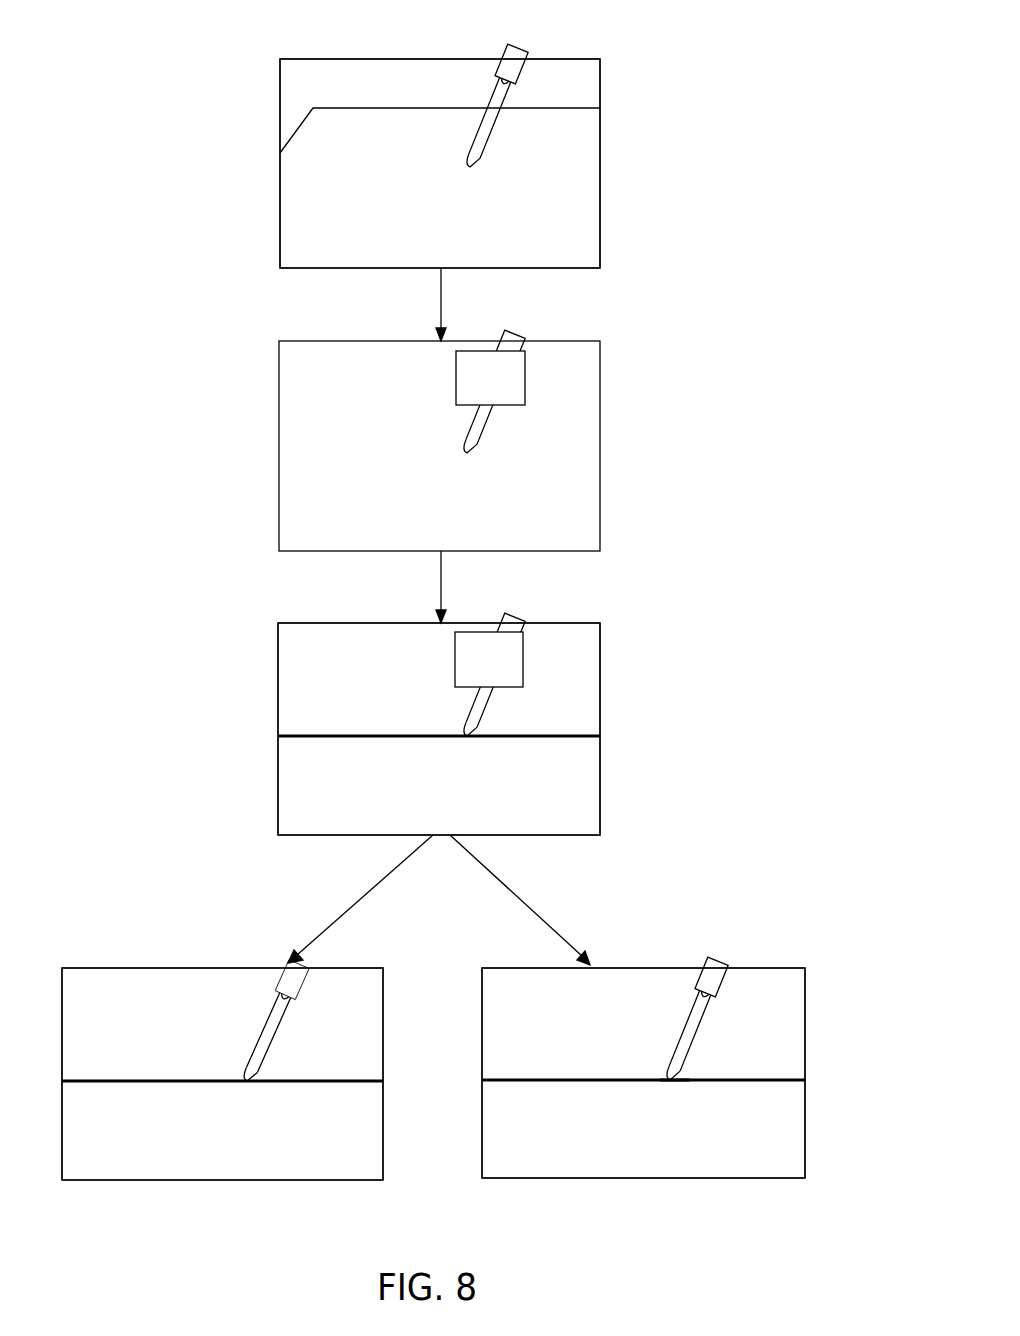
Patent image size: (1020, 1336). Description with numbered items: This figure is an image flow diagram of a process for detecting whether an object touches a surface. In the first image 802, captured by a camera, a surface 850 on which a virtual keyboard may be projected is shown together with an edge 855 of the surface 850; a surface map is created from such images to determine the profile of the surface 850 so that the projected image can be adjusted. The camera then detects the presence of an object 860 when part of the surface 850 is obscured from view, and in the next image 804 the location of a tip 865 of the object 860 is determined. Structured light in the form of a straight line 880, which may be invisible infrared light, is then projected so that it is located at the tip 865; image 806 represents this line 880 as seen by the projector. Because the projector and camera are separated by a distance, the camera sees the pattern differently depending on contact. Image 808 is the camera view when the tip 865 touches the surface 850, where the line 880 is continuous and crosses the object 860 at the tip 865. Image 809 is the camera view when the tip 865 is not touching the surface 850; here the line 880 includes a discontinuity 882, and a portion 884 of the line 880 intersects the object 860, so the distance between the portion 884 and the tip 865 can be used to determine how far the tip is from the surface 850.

The image 802 is at (280, 188).
The image 804 is at (279, 472).
The image 806 is at (278, 755).
The image 808 is at (117, 968).
The image 809 is at (765, 968).
The surface 850 is at (535, 247).
The edge 855 is at (403, 108).
The object 860 is at (487, 142).
The tip 865 is at (462, 448).
The straight line 880 is at (390, 737).
The discontinuity 882 is at (680, 1083).
The portion of line 884 is at (665, 1065).